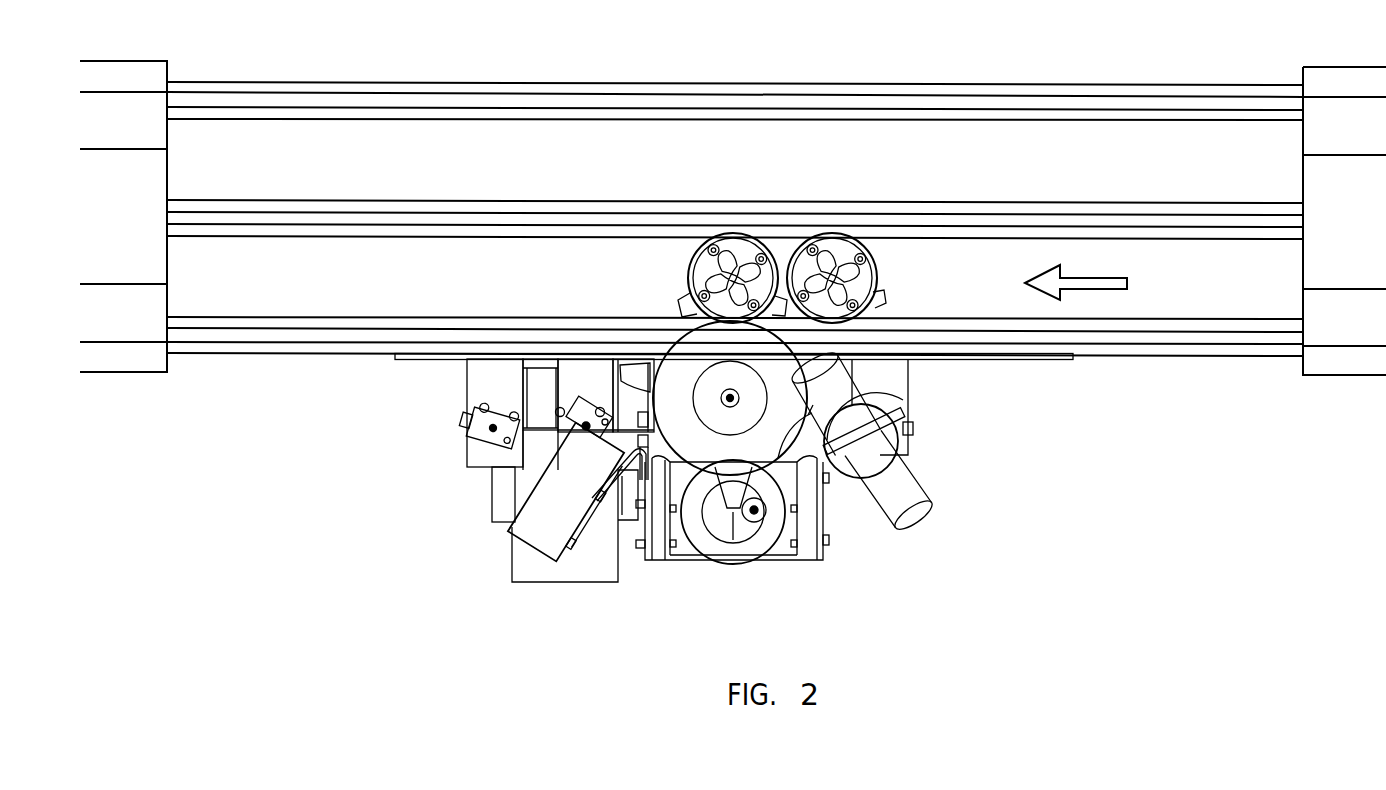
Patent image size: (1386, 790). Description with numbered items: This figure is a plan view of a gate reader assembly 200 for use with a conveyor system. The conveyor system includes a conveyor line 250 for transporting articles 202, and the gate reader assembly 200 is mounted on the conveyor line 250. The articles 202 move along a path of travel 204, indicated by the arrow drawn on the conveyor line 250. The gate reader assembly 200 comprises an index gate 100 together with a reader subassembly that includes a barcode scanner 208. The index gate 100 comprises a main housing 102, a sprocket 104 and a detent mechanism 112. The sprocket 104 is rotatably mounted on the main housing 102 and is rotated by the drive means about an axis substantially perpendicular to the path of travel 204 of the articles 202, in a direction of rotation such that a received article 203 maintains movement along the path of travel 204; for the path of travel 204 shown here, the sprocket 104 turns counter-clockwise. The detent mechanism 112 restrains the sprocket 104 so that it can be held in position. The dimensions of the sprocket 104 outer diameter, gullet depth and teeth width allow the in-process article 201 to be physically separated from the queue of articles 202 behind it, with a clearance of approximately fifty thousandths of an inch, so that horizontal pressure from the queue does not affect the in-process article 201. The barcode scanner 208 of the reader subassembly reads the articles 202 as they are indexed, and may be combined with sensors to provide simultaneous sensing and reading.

The conveyor line 250 is at (1150, 84).
The path of travel 204 is at (1082, 278).
The received article 203 is at (688, 271).
The articles 202 is at (841, 238).
The in-process article 201 is at (877, 292).
The gate reader assembly 200 is at (485, 513).
The barcode scanner 208 is at (542, 545).
The index gate 100 is at (783, 539).
The main housing 102 is at (826, 532).
The sprocket 104 is at (905, 402).
The detent mechanism 112 is at (738, 550).